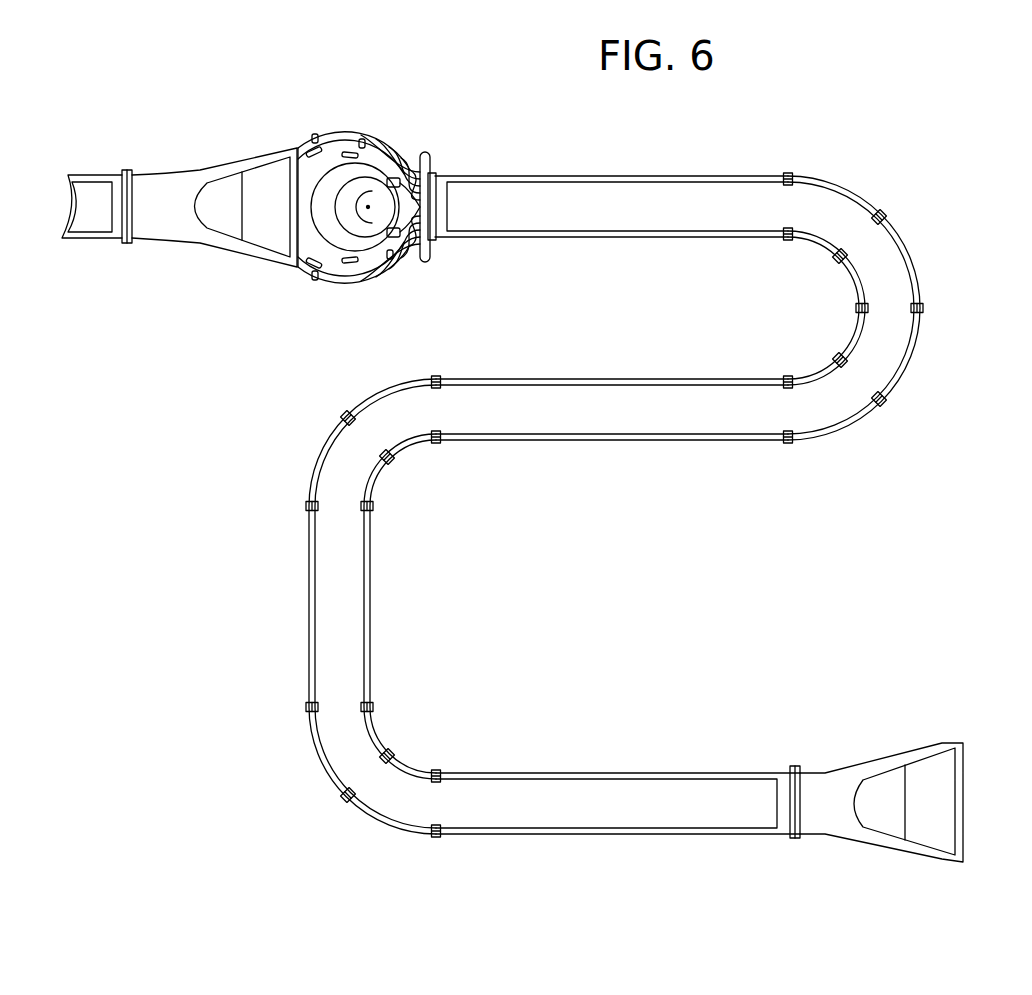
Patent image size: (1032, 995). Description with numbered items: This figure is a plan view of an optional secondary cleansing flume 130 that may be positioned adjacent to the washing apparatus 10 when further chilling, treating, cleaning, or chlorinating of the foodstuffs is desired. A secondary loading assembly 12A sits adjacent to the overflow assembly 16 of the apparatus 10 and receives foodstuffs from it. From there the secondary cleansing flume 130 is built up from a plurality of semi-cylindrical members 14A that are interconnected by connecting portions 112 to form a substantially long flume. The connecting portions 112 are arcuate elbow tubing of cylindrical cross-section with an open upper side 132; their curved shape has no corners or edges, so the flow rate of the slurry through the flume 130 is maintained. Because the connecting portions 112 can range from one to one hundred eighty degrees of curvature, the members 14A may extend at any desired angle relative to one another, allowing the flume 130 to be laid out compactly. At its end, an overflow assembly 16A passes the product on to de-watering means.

The apparatus 10 is at (95, 248).
The overflow assembly 16 is at (200, 171).
The secondary loading assembly 12A is at (355, 123).
The semi-cylindrical members 14A is at (613, 233).
The secondary cleansing flume 130 is at (875, 180).
The open upper side 132 is at (730, 418).
The connecting portions 112 is at (400, 455).
The overflow assembly 16A is at (885, 848).